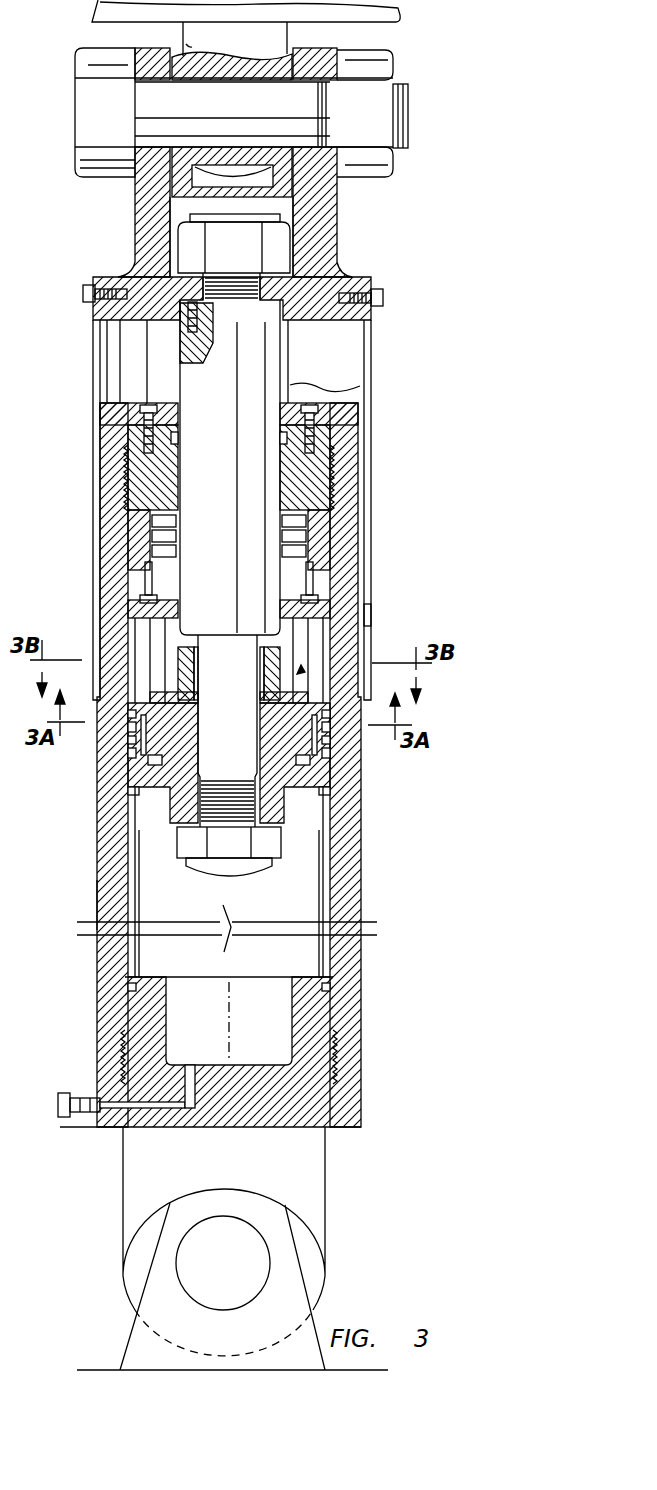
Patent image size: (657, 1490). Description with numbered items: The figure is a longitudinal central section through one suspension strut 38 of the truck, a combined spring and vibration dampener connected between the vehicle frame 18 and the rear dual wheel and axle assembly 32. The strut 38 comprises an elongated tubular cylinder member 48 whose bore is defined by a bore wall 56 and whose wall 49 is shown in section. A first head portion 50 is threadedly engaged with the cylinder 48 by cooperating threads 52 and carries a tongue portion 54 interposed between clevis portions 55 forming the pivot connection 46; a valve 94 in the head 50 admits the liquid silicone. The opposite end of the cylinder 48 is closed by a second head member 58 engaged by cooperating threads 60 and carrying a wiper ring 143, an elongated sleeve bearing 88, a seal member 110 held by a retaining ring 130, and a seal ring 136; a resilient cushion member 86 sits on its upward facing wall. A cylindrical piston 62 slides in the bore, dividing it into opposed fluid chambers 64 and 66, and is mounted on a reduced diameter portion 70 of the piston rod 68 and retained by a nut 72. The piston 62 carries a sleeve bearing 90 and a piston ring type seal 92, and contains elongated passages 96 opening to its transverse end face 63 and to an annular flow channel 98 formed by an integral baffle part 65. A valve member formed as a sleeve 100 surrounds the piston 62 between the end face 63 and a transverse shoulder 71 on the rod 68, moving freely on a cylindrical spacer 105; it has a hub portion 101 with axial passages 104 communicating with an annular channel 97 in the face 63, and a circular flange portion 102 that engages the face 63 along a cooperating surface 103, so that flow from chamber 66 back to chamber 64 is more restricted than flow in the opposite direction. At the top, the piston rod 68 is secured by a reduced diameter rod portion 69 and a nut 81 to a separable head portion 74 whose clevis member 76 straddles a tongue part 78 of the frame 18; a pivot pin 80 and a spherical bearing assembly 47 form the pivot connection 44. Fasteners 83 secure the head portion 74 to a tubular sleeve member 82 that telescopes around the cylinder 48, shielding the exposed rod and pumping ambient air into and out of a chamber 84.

The vehicle frame 18 is at (390, 28).
The spherical bearing assembly 47 is at (190, 47).
The pivot pin 80 is at (242, 110).
The clevis arms 76 is at (140, 208).
The tongue part 78 is at (178, 215).
The pivot connection 44 is at (302, 135).
The nut 81 is at (242, 262).
The head portion 74 is at (365, 278).
The fasteners 83 is at (383, 297).
The resilient cushion member 86 is at (128, 388).
The chamber 84 is at (168, 374).
The reduced diameter rod portion 69 is at (227, 312).
The tubular sleeve member 82 is at (371, 355).
The piston rod 68 is at (360, 386).
The wiper ring 143 is at (178, 437).
The second head member 58 is at (362, 440).
The sleeve bearing 88 is at (180, 472).
The cooperating threads 60 is at (338, 480).
The suspension strut 38 is at (371, 525).
The seal member 110 is at (98, 548).
The retaining ring 130 is at (320, 570).
The seal ring 136 is at (148, 588).
The hub portion 101 is at (262, 650).
The transverse shoulder 71 is at (230, 638).
The elongated passages 104 is at (362, 615).
The piston end face 63 is at (152, 668).
The fluid chamber 66 is at (318, 655).
The valve member 100 is at (297, 673).
The annular channel 97 is at (194, 690).
The cylindrical spacer 105 is at (266, 688).
The piston ring type seal 92 is at (125, 713).
The elongated passages 96 is at (130, 722).
The flange portion 102 is at (340, 712).
The sleeve bearing 90 is at (128, 745).
The cooperating surface 103 is at (328, 790).
The annular flow channel 98 is at (130, 768).
The piston 62 is at (359, 810).
The reduced diameter portion 70 is at (150, 793).
The piston baffle part 65 is at (148, 826).
The cylinder member 48 is at (358, 843).
The bore wall 56 is at (323, 875).
The housing wall 49 is at (97, 903).
The nut 72 is at (226, 870).
The fluid chamber 64 is at (300, 907).
The cooperating threads 52 is at (333, 1057).
The valve 94 is at (100, 1125).
The first head portion 50 is at (356, 1126).
The tongue portion 54 is at (310, 1190).
The clevis portions 55 is at (167, 1225).
The pivot connection 46 is at (255, 1255).
The rear dual wheel and axle assembly 32 is at (95, 1370).